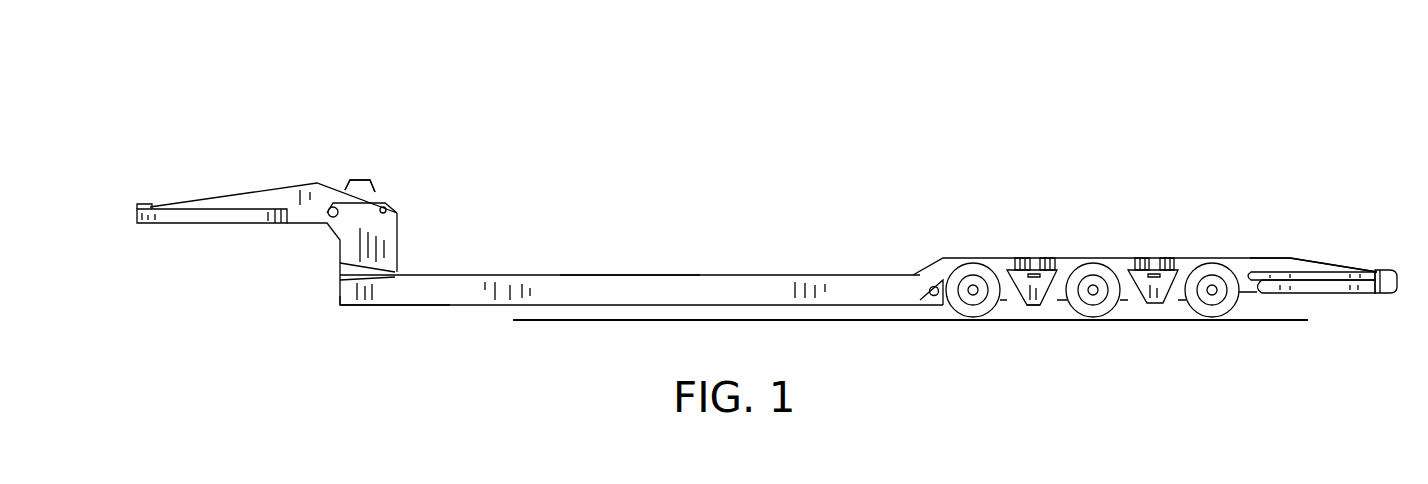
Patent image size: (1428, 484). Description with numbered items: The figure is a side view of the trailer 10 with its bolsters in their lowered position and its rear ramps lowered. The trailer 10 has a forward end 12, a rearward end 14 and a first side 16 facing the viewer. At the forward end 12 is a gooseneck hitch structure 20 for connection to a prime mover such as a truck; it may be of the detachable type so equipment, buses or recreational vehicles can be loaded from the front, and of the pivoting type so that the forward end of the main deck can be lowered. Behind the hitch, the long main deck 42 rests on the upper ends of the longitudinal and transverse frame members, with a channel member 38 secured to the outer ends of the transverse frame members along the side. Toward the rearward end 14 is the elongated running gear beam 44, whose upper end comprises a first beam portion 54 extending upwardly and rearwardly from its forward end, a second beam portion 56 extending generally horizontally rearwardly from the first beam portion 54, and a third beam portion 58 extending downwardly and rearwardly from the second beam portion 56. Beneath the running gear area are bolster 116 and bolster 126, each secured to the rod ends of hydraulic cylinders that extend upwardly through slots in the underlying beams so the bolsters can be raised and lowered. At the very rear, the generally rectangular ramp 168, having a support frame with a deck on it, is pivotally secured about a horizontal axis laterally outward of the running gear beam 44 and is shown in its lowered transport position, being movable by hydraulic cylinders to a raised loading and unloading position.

The trailer 10 is at (742, 241).
The forward end 12 is at (217, 180).
The rearward end 14 is at (1402, 253).
The first side 16 is at (433, 315).
The gooseneck hitch structure 20 is at (308, 173).
The channel member 38 is at (547, 293).
The main deck 42 is at (568, 275).
The running gear beam 44 is at (1098, 257).
The first beam portion 54 is at (928, 267).
The second beam portion 56 is at (1065, 262).
The third beam portion 58 is at (1300, 257).
The bolster 116 is at (1033, 305).
The bolster 126 is at (1153, 306).
The ramp 168 is at (1318, 277).